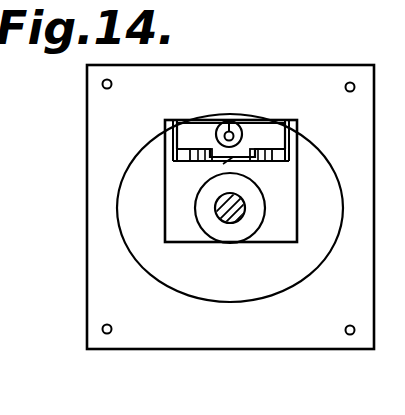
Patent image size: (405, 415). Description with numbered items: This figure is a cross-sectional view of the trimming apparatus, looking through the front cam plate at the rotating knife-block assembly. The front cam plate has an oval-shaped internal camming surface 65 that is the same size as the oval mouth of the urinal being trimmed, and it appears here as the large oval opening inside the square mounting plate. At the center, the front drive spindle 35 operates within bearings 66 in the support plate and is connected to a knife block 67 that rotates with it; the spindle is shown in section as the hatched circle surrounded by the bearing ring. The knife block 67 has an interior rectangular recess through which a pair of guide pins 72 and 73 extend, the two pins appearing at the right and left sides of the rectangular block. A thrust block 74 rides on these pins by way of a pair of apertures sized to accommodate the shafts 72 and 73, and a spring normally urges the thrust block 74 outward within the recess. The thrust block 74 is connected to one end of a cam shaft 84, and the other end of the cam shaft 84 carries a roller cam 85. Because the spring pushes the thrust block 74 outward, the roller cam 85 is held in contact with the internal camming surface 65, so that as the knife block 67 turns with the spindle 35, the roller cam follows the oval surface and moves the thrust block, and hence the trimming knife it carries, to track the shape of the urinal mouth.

The front drive spindle 35 is at (221, 203).
The internal camming surface 65 is at (231, 302).
The bearings 66 is at (265, 202).
The knife block 67 is at (165, 243).
The guide pin 72 is at (298, 159).
The guide pin 73 is at (172, 161).
The thrust block 74 is at (272, 133).
The cam shaft 84 is at (229, 128).
The roller cam 85 is at (237, 122).